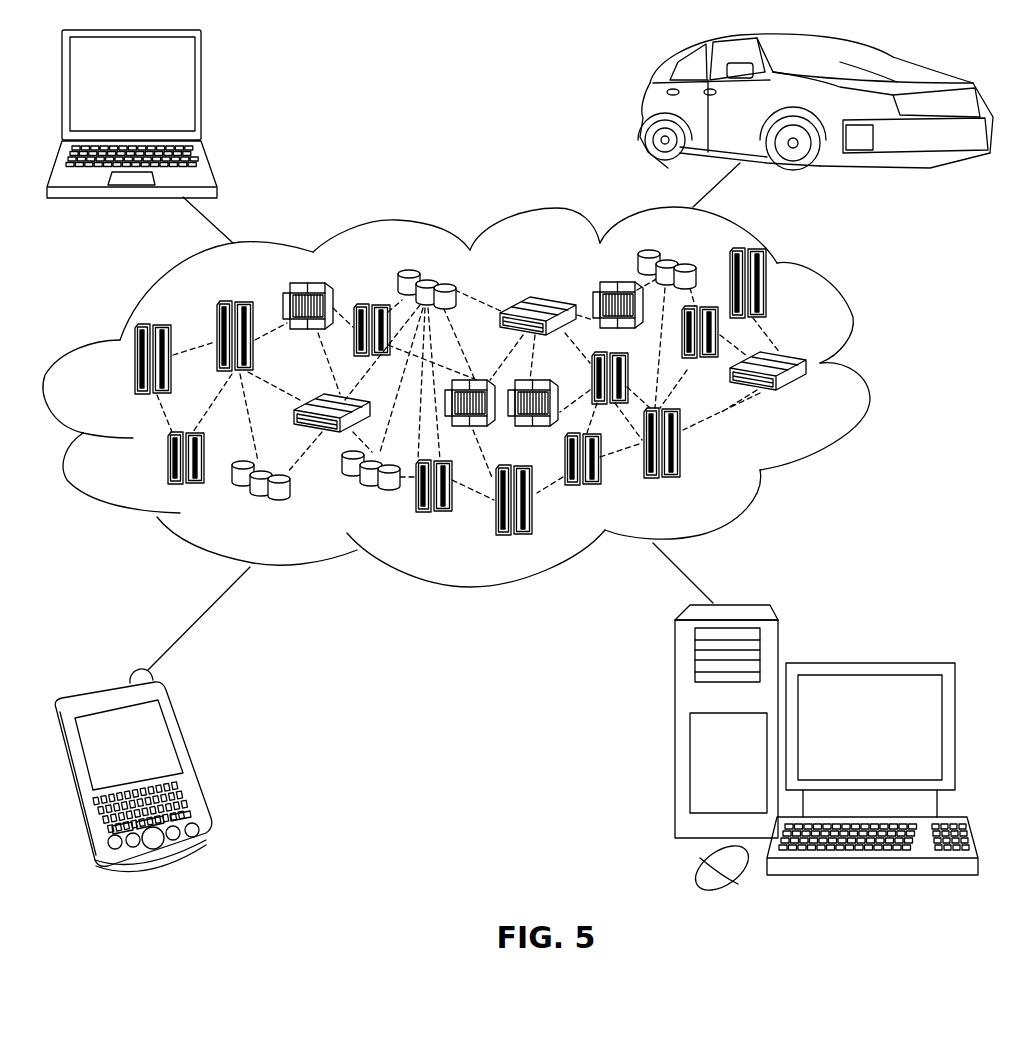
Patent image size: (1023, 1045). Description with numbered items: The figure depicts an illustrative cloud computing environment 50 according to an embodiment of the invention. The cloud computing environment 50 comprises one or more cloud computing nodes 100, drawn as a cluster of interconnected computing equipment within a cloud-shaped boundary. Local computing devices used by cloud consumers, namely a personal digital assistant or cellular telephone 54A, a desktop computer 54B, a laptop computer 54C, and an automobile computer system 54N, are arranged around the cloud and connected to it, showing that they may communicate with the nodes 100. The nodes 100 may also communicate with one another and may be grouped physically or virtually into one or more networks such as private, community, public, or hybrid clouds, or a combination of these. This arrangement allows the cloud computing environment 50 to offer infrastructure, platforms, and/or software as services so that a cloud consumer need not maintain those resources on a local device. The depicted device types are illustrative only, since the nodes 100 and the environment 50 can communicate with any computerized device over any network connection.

The cloud computing environment 50 is at (870, 365).
The cloud computing nodes 100 is at (808, 400).
The personal digital assistant or cellular telephone 54A is at (190, 758).
The desktop computer 54B is at (866, 662).
The laptop computer 54C is at (203, 93).
The automobile computer system 54N is at (645, 112).